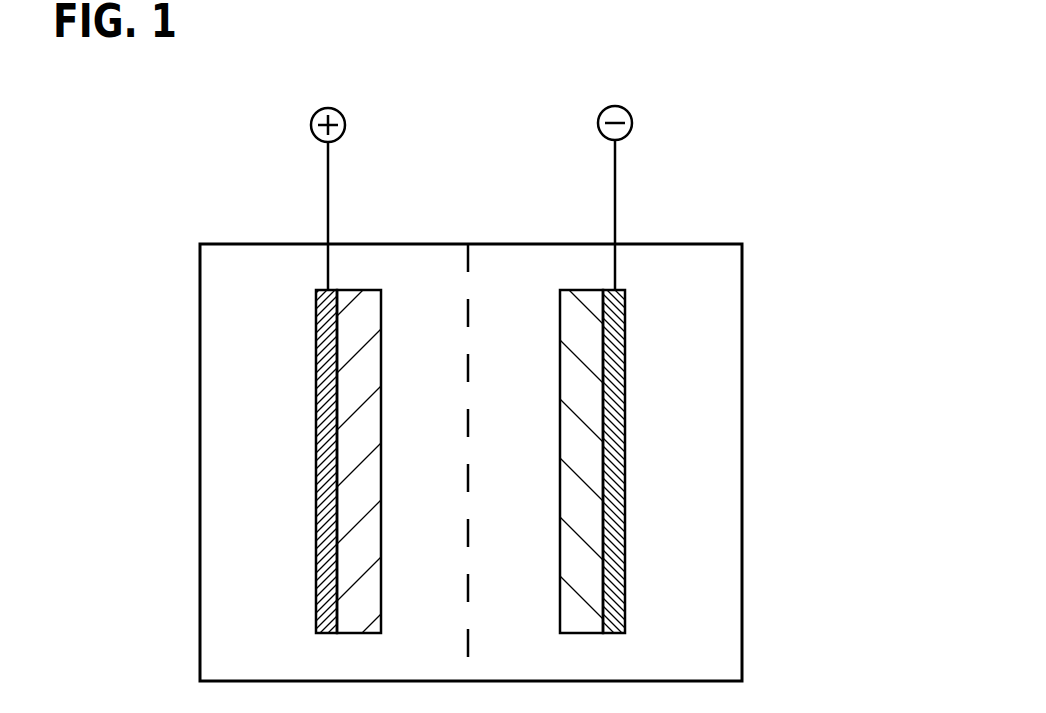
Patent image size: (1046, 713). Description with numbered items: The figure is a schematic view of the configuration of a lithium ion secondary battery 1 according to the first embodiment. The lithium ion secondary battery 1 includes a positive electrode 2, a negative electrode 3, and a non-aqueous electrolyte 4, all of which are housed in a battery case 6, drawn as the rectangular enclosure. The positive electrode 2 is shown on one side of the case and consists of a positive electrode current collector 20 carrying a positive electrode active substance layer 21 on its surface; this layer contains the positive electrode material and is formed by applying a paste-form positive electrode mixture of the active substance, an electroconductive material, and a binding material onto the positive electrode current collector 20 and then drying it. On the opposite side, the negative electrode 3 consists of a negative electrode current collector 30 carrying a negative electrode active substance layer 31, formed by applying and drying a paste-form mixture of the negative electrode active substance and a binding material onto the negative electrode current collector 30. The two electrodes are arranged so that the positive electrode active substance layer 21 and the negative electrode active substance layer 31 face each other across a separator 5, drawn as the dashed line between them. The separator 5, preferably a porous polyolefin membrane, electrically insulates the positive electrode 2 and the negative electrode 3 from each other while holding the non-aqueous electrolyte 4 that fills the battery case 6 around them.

The lithium ion secondary battery 1 is at (213, 150).
The positive electrode 2 is at (100, 420).
The positive electrode current collector 20 is at (323, 518).
The positive electrode active substance layer 21 is at (355, 460).
The negative electrode 3 is at (842, 428).
The negative electrode current collector 30 is at (623, 513).
The negative electrode active substance layer 31 is at (587, 445).
The non-aqueous electrolyte 4 is at (516, 295).
The separator 5 is at (468, 263).
The battery case 6 is at (742, 272).